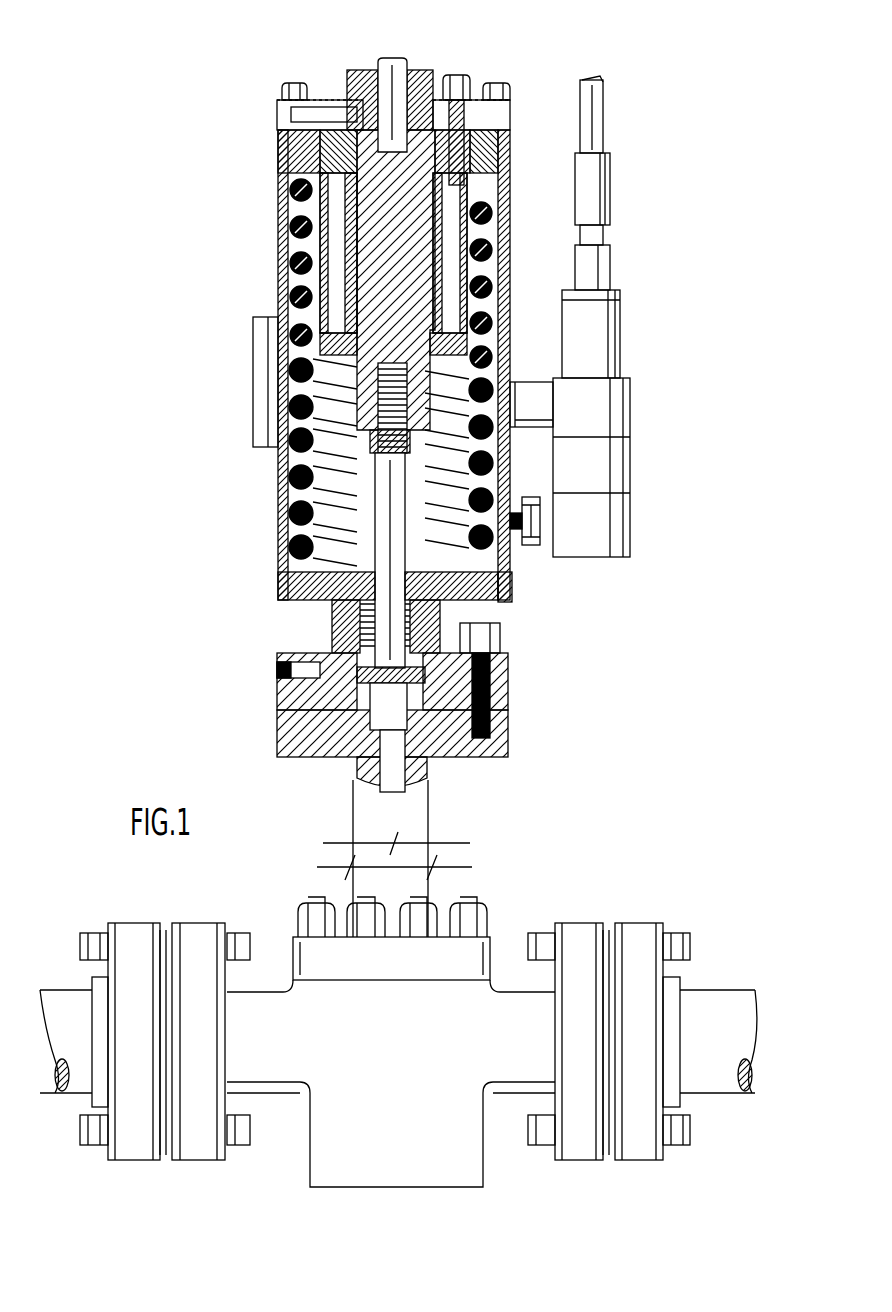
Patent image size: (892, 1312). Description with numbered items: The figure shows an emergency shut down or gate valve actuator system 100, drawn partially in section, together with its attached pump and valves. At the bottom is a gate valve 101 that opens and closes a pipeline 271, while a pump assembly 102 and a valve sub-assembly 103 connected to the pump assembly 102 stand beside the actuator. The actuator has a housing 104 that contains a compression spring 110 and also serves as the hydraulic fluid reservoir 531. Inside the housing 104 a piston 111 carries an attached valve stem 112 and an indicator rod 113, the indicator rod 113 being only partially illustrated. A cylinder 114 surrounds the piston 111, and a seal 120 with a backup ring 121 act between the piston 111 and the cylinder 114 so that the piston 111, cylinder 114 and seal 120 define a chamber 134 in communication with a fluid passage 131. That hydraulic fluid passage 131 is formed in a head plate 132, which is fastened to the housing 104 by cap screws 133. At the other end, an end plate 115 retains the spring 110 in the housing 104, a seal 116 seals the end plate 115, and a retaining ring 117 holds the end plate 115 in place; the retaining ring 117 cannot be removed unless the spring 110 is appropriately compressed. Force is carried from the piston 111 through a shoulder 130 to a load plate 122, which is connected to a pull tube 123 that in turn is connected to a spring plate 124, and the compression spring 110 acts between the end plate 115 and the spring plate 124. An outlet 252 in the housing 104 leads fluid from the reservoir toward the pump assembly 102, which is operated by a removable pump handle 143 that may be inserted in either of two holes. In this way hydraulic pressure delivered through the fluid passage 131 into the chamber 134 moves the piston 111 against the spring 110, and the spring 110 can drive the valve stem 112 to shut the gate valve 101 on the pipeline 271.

The gate valve actuator system 100 is at (243, 212).
The gate valve 101 is at (508, 920).
The pump assembly 102 is at (649, 322).
The valve sub-assembly 103 is at (643, 418).
The housing 104 is at (510, 283).
The compression spring 110 is at (300, 460).
The piston 111 is at (395, 390).
The valve stem 112 is at (292, 560).
The indicator rod 113 is at (405, 68).
The cylinder 114 is at (350, 244).
The end plate 115 is at (332, 630).
The seal 116 is at (512, 584).
The retaining ring 117 is at (515, 605).
The seal 120 is at (505, 148).
The backup ring 121 is at (508, 192).
The load plate 122 is at (330, 372).
The pull tube 123 is at (330, 288).
The spring plate 124 is at (508, 205).
The shoulder 130 is at (278, 306).
The fluid passage 131 is at (333, 100).
The head plate 132 is at (343, 100).
The cap screws 133 is at (282, 90).
The chamber 134 is at (275, 132).
The pump handle 143 is at (607, 112).
The outlet 252 is at (528, 552).
The pipeline 271 is at (688, 935).
The reservoir 531 is at (512, 355).